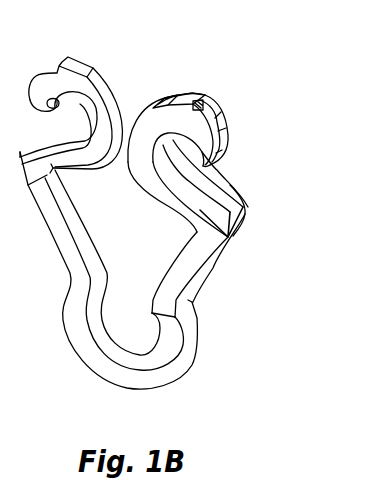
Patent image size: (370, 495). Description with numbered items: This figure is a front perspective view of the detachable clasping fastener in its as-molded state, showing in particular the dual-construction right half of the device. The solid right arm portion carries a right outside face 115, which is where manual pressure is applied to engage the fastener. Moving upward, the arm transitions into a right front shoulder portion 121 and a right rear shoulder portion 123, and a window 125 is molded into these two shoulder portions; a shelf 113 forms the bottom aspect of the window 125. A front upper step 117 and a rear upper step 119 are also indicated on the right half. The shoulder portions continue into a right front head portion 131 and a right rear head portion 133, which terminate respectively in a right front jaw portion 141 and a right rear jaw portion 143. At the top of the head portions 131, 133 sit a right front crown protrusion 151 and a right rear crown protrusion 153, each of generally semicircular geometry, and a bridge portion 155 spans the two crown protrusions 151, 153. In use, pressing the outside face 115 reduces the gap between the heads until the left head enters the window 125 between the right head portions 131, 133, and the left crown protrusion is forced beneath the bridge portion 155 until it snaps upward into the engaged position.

The shelf 113 is at (228, 238).
The right outside face 115 is at (205, 267).
The front upper step 117 is at (192, 302).
The rear upper step 119 is at (193, 303).
The right front shoulder portion 121 is at (236, 224).
The right rear shoulder portion 123 is at (208, 193).
The window 125 is at (177, 193).
The right front head portion 131 is at (152, 127).
The right rear head portion 133 is at (172, 93).
The right front jaw portion 141 is at (202, 153).
The right rear jaw portion 143 is at (230, 133).
The right front crown protrusion 151 is at (192, 117).
The right rear crown protrusion 153 is at (205, 108).
The bridge portion 155 is at (185, 95).